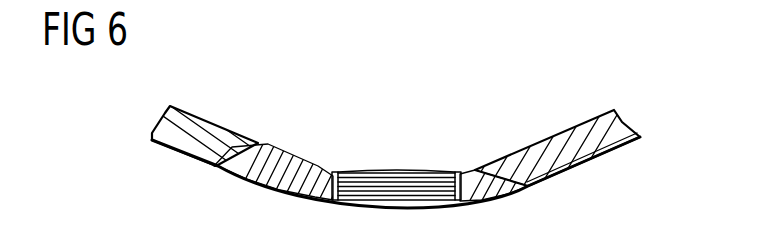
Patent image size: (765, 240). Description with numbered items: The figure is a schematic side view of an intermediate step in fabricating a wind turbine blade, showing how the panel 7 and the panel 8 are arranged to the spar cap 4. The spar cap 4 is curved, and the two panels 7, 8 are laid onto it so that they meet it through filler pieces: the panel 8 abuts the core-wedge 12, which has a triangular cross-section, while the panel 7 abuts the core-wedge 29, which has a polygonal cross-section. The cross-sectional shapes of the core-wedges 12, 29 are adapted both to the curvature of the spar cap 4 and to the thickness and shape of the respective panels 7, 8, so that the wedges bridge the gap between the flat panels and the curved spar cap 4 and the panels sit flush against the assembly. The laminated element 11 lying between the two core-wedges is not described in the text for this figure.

The spar cap 4 is at (434, 104).
The panel 7 is at (188, 137).
The panel 8 is at (593, 143).
The laminated core 11 is at (385, 178).
The core-wedge 12 is at (465, 180).
The core-wedge 29 is at (297, 158).